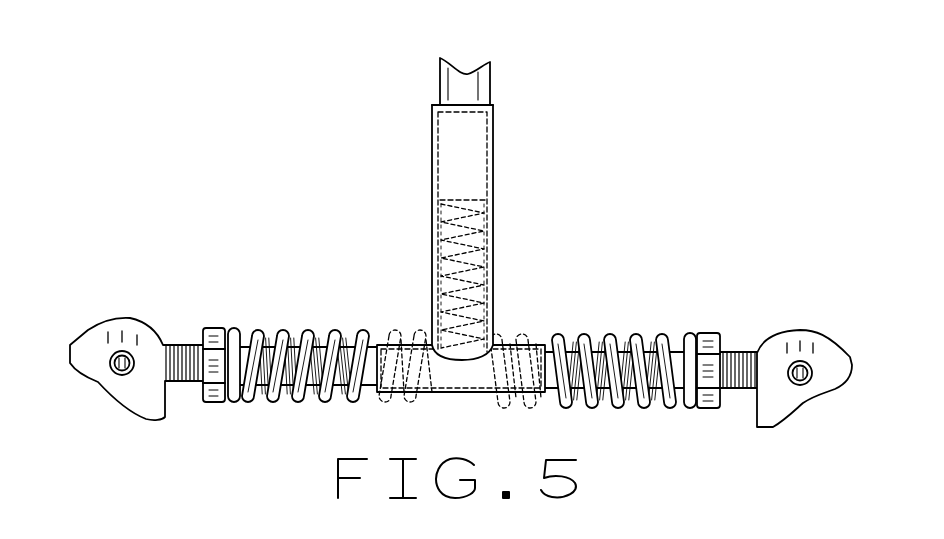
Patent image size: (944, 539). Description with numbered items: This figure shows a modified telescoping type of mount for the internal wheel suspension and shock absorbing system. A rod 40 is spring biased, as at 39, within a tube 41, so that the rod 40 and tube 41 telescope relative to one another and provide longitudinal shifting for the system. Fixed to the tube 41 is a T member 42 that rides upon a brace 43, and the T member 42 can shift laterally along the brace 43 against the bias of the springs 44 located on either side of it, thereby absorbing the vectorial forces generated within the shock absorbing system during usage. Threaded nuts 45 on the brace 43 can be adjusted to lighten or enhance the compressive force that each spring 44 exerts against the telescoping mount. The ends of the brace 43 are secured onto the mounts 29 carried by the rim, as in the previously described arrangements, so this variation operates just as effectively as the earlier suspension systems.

The mount 29 is at (100, 323).
The spring bias 39 is at (478, 240).
The rod 40 is at (490, 80).
The tube 41 is at (493, 172).
The T member 42 is at (460, 392).
The brace 43 is at (738, 352).
The spring 44 is at (283, 330).
The threaded nut 45 is at (213, 328).